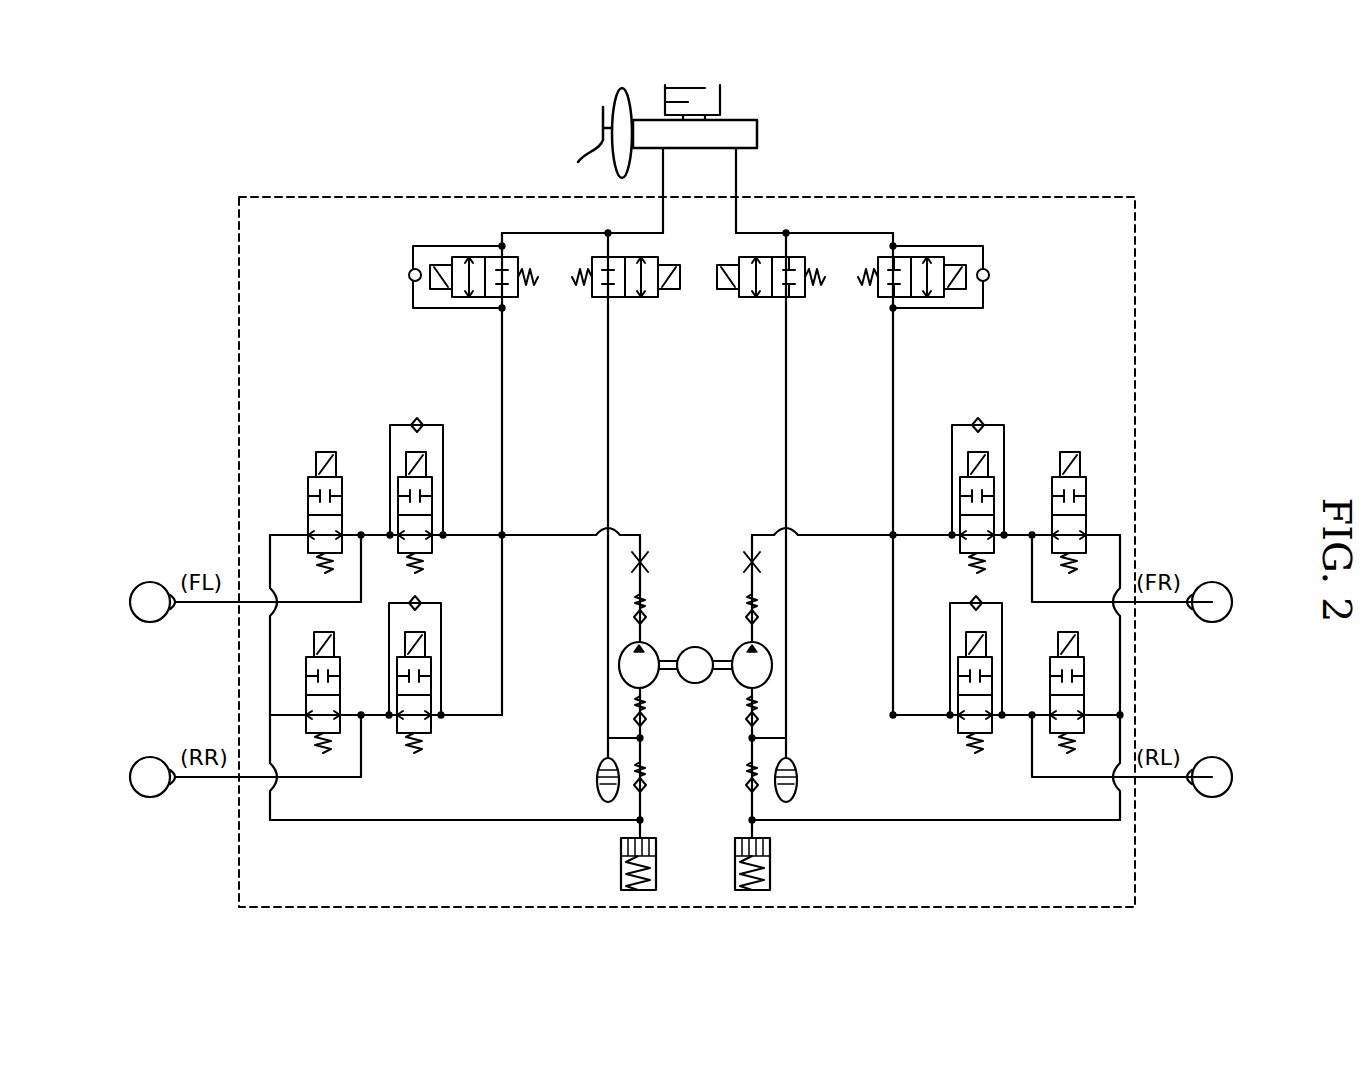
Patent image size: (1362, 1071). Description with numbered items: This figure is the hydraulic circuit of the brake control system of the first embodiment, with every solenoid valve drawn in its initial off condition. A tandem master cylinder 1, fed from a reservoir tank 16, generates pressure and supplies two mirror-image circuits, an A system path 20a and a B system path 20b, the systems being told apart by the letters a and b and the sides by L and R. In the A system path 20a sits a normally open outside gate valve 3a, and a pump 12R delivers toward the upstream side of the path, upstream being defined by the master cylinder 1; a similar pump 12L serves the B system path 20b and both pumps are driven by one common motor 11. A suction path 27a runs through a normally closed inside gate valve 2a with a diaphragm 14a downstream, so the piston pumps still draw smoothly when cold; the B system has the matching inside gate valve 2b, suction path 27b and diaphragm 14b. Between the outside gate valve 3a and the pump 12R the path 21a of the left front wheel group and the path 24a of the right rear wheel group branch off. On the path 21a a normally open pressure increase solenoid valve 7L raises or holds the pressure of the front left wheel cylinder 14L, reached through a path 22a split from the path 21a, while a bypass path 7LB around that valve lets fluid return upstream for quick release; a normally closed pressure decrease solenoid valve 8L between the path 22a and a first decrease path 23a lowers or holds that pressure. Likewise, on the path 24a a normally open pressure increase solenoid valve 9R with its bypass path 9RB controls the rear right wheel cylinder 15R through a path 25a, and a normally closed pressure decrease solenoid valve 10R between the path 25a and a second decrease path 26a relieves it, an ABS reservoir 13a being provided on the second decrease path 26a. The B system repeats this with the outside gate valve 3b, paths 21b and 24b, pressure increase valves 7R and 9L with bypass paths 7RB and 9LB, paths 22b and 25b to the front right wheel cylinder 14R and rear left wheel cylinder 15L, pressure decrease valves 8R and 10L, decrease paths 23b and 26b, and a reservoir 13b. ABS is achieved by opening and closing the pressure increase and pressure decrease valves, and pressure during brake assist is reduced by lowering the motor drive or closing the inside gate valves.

The master cylinder 1 is at (757, 133).
The reservoir tank 16 is at (695, 88).
The inside gate valve 2a is at (640, 303).
The inside gate valve 2b is at (760, 303).
The outside gate valve 3a is at (452, 248).
The outside gate valve 3b is at (935, 312).
The pressure increase solenoid valve 7L is at (446, 512).
The pressure increase solenoid valve 7R is at (1008, 470).
The pressure decrease solenoid valve 8L is at (306, 490).
The pressure decrease solenoid valve 8R is at (1090, 490).
The bypass path 7LB is at (430, 416).
The bypass path 7RB is at (946, 430).
The pressure increase solenoid valve 9R is at (400, 752).
The pressure increase solenoid valve 9L is at (951, 740).
The pressure decrease solenoid valve 10R is at (344, 680).
The pressure decrease solenoid valve 10L is at (1046, 670).
The bypass path 9RB is at (452, 676).
The bypass path 9LB is at (935, 636).
The motor 11 is at (699, 648).
The pump 12R is at (619, 668).
The pump 12L is at (772, 668).
The reservoir 13a is at (621, 870).
The reservoir 13b is at (770, 870).
The diaphragm 14a is at (597, 777).
The diaphragm 14b is at (797, 777).
The front left wheel cylinder 14L is at (138, 588).
The front right wheel cylinder 14R is at (1224, 590).
The rear right wheel cylinder 15R is at (138, 763).
The rear left wheel cylinder 15L is at (1224, 770).
The A system path 20a is at (503, 466).
The B system path 20b is at (893, 420).
The path of left front wheel group 21a is at (463, 540).
The path of front wheel group 21b is at (912, 530).
The path 22a is at (363, 528).
The path 22b is at (1015, 528).
The first decrease path 23a is at (270, 545).
The first decrease path 23b is at (1122, 545).
The path of right rear wheel group 24a is at (488, 720).
The path of rear wheel group 24b is at (916, 712).
The path 25a is at (336, 780).
The path 25b is at (1045, 782).
The second decrease path 26a is at (270, 822).
The second decrease path 26b is at (1120, 822).
The suction path 27a is at (610, 460).
The suction path 27b is at (786, 460).